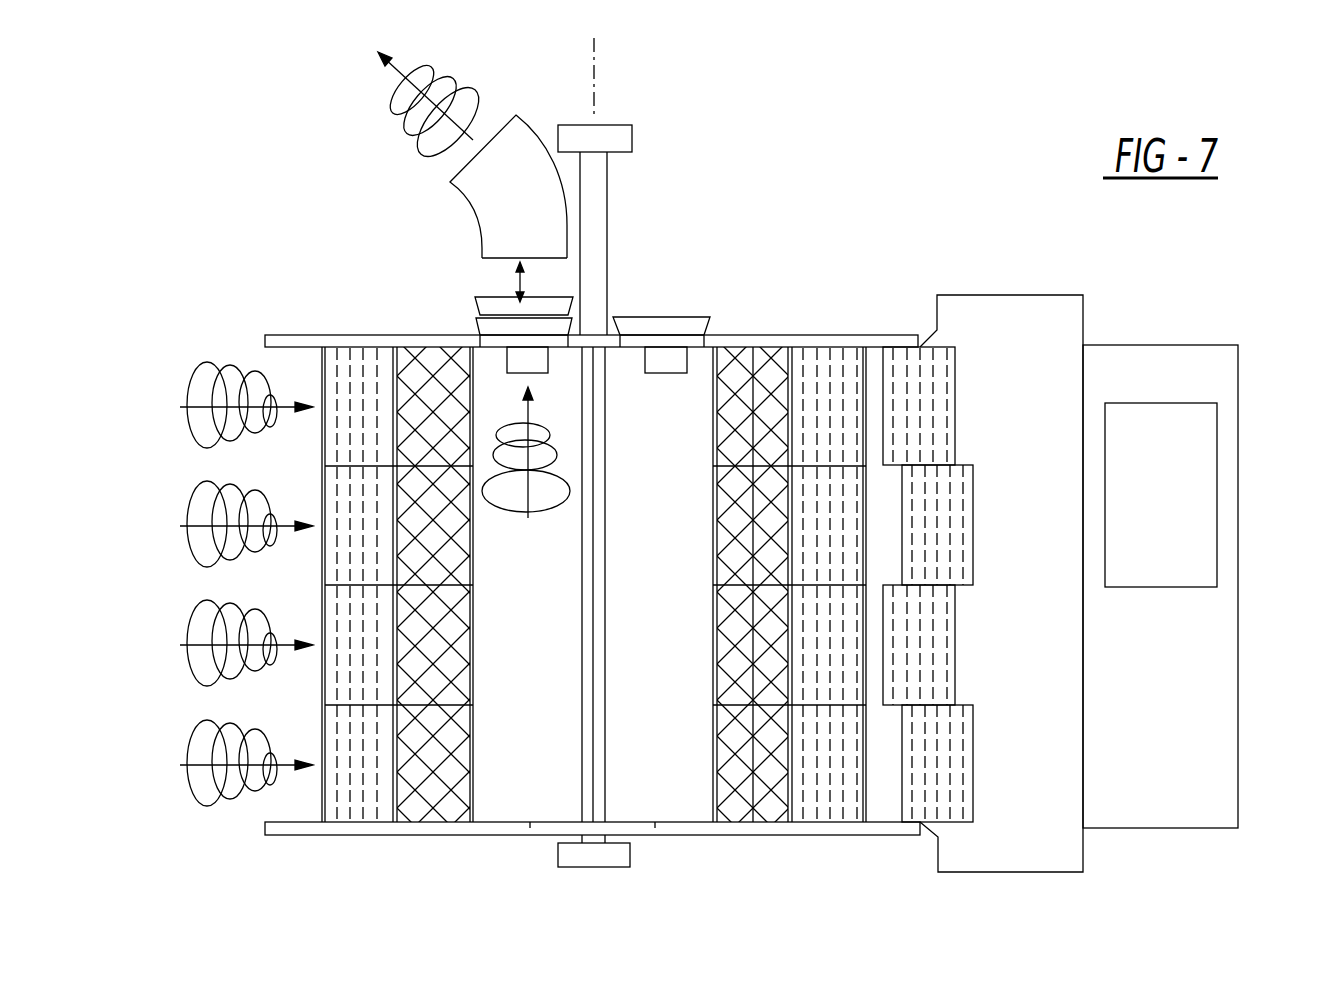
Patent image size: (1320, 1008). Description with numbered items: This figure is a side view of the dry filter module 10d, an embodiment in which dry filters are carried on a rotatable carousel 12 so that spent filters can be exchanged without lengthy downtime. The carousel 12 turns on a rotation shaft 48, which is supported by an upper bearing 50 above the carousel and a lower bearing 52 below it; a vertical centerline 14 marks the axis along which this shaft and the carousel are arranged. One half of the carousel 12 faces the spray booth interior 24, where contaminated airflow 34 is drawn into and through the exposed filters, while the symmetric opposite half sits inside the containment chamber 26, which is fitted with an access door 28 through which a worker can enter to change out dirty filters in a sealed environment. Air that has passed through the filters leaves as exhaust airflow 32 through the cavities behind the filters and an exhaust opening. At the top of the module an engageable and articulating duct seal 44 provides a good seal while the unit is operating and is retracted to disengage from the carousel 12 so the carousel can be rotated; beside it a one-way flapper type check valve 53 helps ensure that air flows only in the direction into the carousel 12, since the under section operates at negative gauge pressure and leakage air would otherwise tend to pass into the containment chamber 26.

The dry filter module 10d is at (843, 170).
The carousel 12 is at (808, 335).
The axis of rotation 14 is at (594, 54).
The spray booth interior 24 is at (157, 706).
The containment chamber 26 is at (1037, 815).
The access door 28 is at (1188, 714).
The exhaust airflow 32 is at (392, 102).
The contaminated airflow 34 is at (190, 382).
The duct seal 44 is at (482, 272).
The rotation shaft 48 is at (607, 272).
The upper bearing 50 is at (632, 138).
The lower bearing 52 is at (630, 855).
The check valve 53 is at (660, 373).